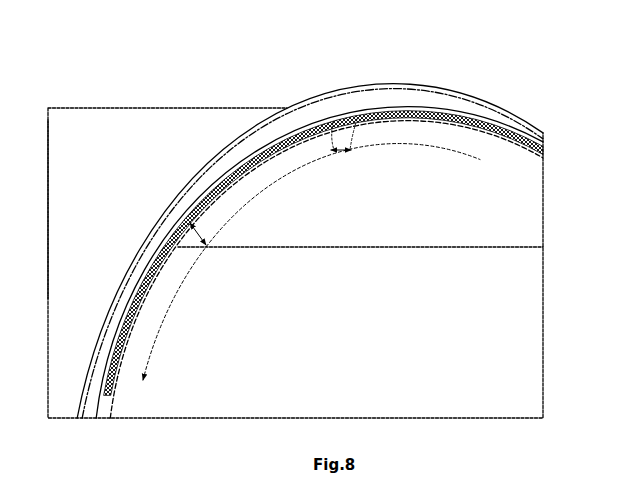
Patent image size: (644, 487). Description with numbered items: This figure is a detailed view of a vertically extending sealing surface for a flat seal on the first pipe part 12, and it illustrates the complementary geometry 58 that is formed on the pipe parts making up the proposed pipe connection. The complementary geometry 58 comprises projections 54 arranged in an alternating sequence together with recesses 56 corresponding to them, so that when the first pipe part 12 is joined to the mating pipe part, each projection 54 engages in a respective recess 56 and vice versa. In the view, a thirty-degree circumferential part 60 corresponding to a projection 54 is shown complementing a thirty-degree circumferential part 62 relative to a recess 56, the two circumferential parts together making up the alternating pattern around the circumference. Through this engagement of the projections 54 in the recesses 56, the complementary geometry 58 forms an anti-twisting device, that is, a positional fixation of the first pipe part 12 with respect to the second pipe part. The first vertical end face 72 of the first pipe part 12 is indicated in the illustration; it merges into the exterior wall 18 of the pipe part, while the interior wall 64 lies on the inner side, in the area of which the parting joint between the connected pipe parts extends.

The first pipe part 12 is at (135, 106).
The exterior wall 18 is at (88, 138).
The projection 54 is at (425, 97).
The recess 56 is at (282, 130).
The complementary geometry 58 is at (344, 156).
The 30°-circumferential part 60 is at (410, 122).
The 30° circumferential part 62 is at (270, 181).
The interior wall 64 is at (528, 292).
The first vertical end face 72 is at (368, 98).